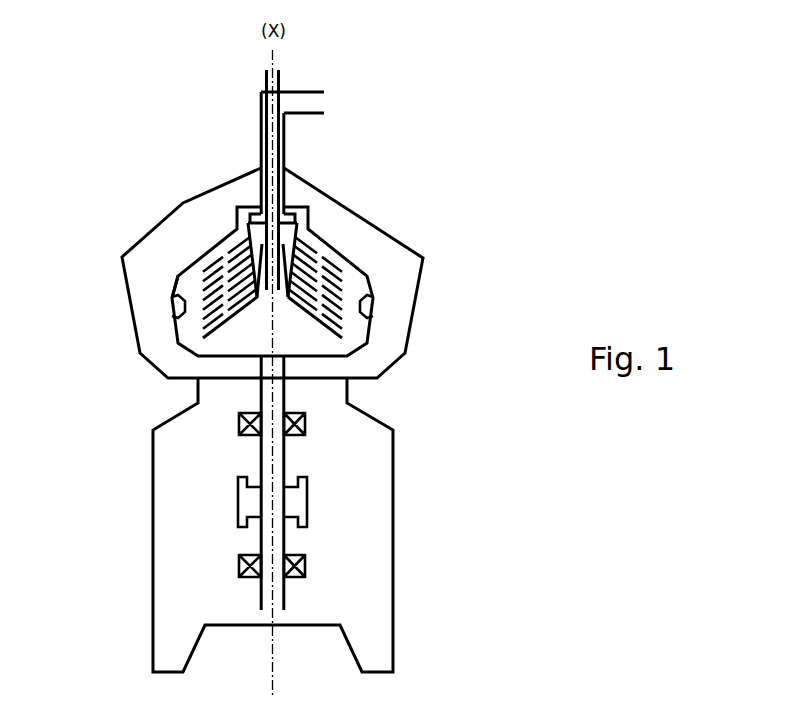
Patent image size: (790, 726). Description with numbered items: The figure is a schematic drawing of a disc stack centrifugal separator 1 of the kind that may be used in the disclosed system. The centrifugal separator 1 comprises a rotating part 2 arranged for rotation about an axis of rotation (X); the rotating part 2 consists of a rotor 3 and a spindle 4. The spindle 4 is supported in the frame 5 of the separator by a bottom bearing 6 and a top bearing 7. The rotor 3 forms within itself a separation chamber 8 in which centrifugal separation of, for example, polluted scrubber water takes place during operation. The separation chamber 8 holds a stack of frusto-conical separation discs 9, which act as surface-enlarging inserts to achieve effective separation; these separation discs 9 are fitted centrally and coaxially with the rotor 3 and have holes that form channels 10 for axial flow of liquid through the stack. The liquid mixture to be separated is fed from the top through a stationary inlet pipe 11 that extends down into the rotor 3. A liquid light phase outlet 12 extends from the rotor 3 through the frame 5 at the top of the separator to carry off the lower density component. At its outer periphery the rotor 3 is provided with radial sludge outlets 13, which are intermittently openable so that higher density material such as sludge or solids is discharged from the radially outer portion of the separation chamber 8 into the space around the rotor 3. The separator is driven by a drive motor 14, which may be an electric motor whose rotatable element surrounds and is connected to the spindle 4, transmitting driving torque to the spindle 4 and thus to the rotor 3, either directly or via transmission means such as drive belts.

The centrifugal separator 1 is at (153, 172).
The rotating part 2 is at (357, 262).
The rotor 3 is at (186, 270).
The spindle 4 is at (261, 457).
The frame 5 is at (226, 184).
The bottom bearing 6 is at (239, 565).
The top bearing 7 is at (239, 418).
The separation chamber 8 is at (345, 322).
The separation discs 9 is at (172, 287).
The channels 10 is at (320, 250).
The stationary inlet pipe 11 is at (273, 143).
The liquid light phase outlet 12 is at (324, 102).
The sludge outlets 13 is at (172, 310).
The drive motor 14 is at (297, 507).